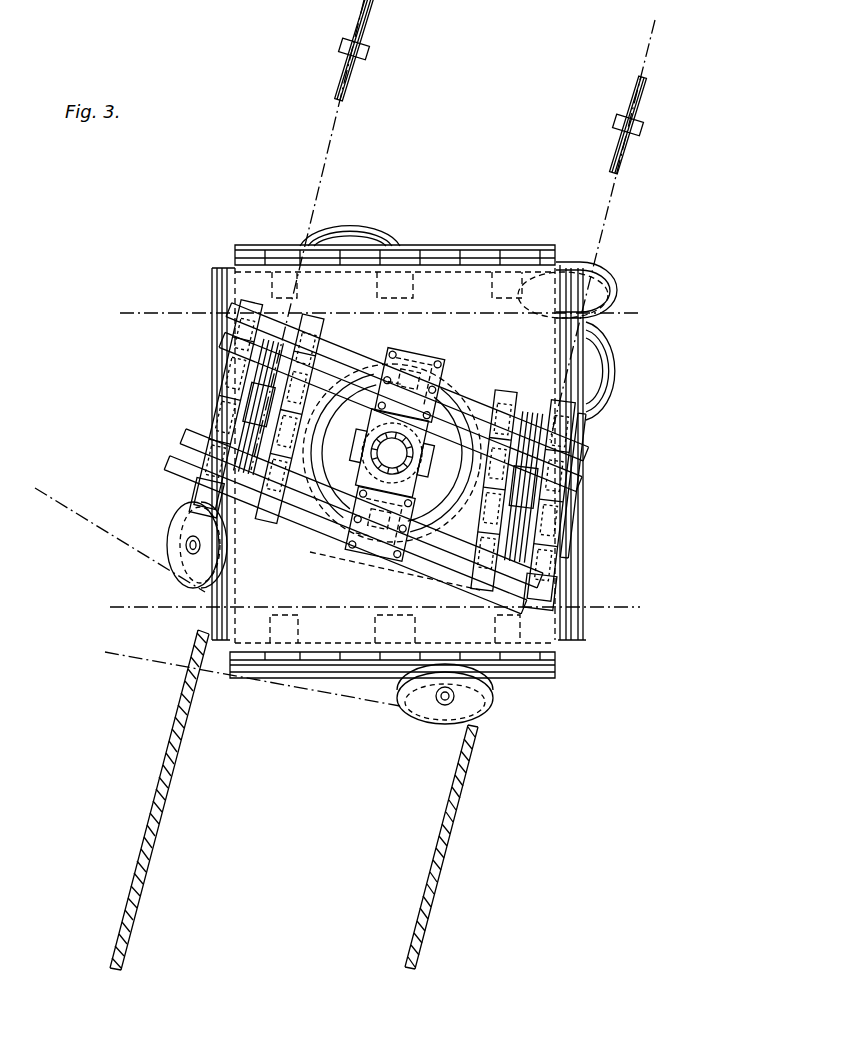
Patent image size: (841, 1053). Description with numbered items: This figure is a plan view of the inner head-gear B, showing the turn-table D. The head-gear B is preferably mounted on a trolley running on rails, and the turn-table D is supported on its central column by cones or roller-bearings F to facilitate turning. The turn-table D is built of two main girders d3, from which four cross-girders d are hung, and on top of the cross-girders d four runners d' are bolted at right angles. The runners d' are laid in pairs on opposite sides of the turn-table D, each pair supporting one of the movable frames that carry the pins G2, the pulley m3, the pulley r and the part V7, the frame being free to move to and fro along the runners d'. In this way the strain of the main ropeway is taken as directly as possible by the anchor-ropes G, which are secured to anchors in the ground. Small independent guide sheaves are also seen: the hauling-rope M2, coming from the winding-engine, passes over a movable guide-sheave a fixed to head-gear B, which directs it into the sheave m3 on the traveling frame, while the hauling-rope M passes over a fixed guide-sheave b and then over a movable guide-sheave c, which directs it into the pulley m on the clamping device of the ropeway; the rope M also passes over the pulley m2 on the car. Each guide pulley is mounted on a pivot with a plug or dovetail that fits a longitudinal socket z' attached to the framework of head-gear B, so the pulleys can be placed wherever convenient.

The head-gear B is at (210, 394).
The longitudinal socket or recess z' is at (394, 473).
The hauling-rope M is at (331, 155).
The hauling-rope M2 is at (258, 490).
The pulley m is at (350, 96).
The movable guide-sheave c is at (360, 228).
The fixed guide-sheave b is at (605, 293).
The movable guide-sheave a is at (176, 520).
The anchor-rope G is at (168, 800).
The turn-table D is at (362, 446).
The cones or roller-bearings F is at (410, 360).
The main girder d3 is at (432, 362).
The cross-girder d is at (381, 459).
The runner d' is at (376, 453).
The pulley r is at (232, 386).
The pulley m3 is at (228, 420).
The pin G2 is at (588, 541).
The strip V7 is at (578, 434).
The pulley m2 is at (395, 559).